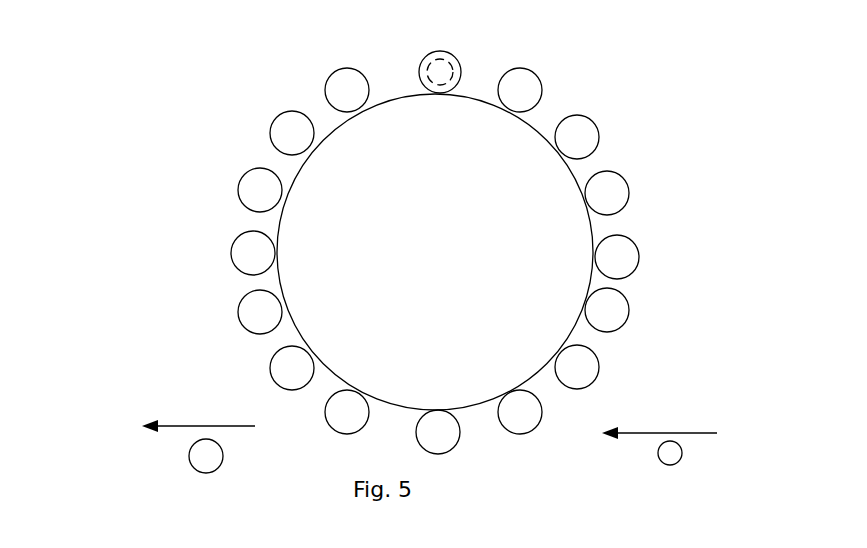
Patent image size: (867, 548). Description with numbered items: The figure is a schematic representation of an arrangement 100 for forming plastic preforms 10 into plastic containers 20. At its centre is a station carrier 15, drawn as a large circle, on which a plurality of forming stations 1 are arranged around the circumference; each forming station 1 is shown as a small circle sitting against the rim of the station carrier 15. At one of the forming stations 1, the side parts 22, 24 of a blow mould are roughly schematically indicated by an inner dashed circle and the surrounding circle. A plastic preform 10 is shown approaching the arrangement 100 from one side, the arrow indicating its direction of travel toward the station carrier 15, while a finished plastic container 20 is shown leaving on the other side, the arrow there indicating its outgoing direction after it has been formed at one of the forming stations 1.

The cell stack assembly 100 is at (206, 195).
The station carrier 15 is at (342, 266).
The forming station 1 is at (285, 375).
The side part of a blow mould 24 is at (461, 68).
The side part of a blow mould 22 is at (427, 73).
The plastic container 20 is at (205, 457).
The plastic preform 10 is at (668, 455).